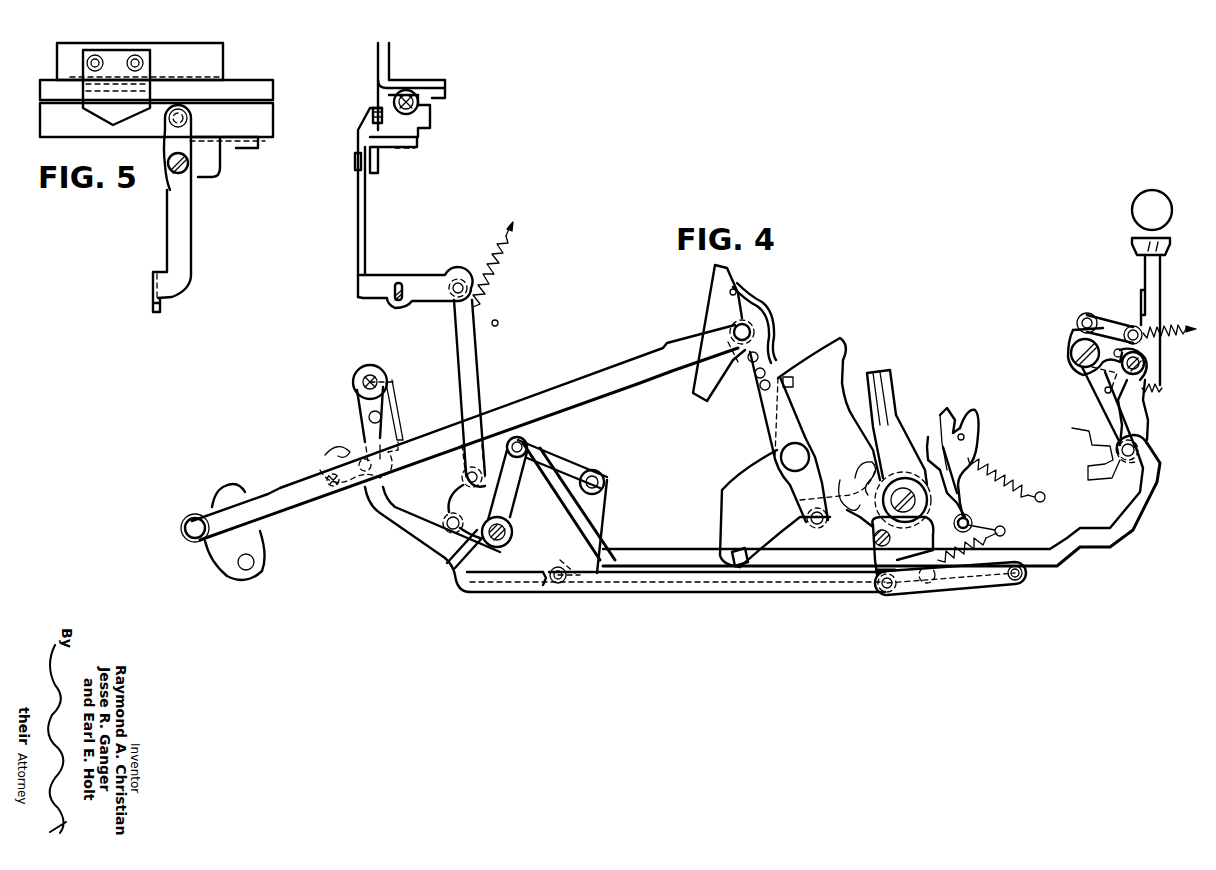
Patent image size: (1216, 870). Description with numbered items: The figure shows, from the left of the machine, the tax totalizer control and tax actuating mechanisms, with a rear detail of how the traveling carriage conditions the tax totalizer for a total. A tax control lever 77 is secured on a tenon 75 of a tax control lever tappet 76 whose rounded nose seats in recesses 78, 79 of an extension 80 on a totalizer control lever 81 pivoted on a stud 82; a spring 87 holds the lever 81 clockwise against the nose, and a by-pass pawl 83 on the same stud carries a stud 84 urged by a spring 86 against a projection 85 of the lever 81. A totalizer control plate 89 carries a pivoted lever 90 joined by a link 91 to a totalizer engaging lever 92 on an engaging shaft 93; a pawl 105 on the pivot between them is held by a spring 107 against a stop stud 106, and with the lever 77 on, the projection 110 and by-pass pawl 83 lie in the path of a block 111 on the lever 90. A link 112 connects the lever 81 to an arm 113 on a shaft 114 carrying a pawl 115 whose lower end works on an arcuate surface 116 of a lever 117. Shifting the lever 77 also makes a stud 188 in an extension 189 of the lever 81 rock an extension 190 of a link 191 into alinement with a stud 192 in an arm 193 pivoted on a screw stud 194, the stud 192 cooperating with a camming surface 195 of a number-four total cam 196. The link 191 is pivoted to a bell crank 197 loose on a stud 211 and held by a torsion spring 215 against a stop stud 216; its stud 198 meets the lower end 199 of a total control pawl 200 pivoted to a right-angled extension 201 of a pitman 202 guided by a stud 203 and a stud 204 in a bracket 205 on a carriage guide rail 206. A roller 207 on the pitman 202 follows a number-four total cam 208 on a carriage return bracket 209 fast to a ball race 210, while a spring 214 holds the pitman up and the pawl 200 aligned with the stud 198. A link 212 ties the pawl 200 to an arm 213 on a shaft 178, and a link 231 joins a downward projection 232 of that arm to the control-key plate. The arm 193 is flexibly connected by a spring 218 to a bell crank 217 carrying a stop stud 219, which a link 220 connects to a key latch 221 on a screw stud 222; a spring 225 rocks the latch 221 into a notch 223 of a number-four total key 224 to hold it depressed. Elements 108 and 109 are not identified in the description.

In FIG. 4, the tenon 75 is at (930, 500).
In FIG. 4, the tax control lever tappet 76 is at (872, 462).
In FIG. 4, the tax control lever 77 is at (895, 420).
In FIG. 4, the recess 78 is at (860, 540).
In FIG. 4, the recess 79 is at (853, 480).
In FIG. 4, the extension 80 is at (838, 455).
In FIG. 4, the totalizer control lever 81 is at (970, 450).
In FIG. 4, the stud 82 is at (875, 541).
In FIG. 4, the by-pass pawl 83 is at (937, 440).
In FIG. 4, the stud 84 is at (1000, 526).
In FIG. 4, the projection 85 is at (970, 519).
In FIG. 4, the spring 86 is at (1003, 534).
In FIG. 4, the spring 87 is at (1000, 480).
In FIG. 4, the totalizer control plate 89 is at (843, 343).
In FIG. 4, the lever 90 is at (762, 405).
In FIG. 4, the link 91 is at (626, 360).
In FIG. 4, the totalizer engaging lever 92 is at (234, 483).
In FIG. 4, the engaging shaft 93 is at (262, 560).
In FIG. 4, the pawl 105 is at (716, 281).
In FIG. 4, the stop stud 106 is at (762, 358).
In FIG. 4, the spring 107 is at (760, 318).
In FIG. 4, the tab 108 is at (732, 557).
In FIG. 4, the stud 109 is at (793, 381).
In FIG. 4, the projection 110 is at (957, 410).
In FIG. 4, the block 111 is at (815, 526).
In FIG. 4, the link 112 is at (512, 586).
In FIG. 4, the arm 113 is at (360, 406).
In FIG. 4, the shaft 114 is at (388, 383).
In FIG. 4, the pawl 115 is at (392, 412).
In FIG. 4, the arcuate surface 116 is at (340, 463).
In FIG. 4, the lever 117 is at (345, 452).
In FIG. 4, the shaft 178 is at (580, 530).
In FIG. 4, the stud 188 is at (1015, 582).
In FIG. 4, the extension 189 is at (940, 590).
In FIG. 4, the extension 190 is at (1150, 468).
In FIG. 4, the link 191 is at (605, 550).
In FIG. 4, the stud 192 is at (1140, 444).
In FIG. 4, the arm 193 is at (1140, 415).
In FIG. 4, the screw stud 194 is at (1071, 353).
In FIG. 4, the camming surface 195 is at (1105, 475).
In FIG. 4, the No. 4 total cam 196 is at (1076, 429).
In FIG. 4, the bell crank 197 is at (505, 497).
In FIG. 4, the stud 198 is at (447, 518).
In FIG. 4, the lower end 199 is at (456, 480).
In FIG. 4, the total control pawl 200 is at (458, 337).
In FIG. 5, the right-angled extension 201 is at (160, 307).
In FIG. 4, the right-angled extension 201 is at (437, 282).
In FIG. 5, the pitman 202 is at (183, 230).
In FIG. 4, the pitman 202 is at (365, 205).
In FIG. 4, the stud 203 is at (396, 312).
In FIG. 5, the stud 204 is at (187, 178).
In FIG. 4, the stud 204 is at (357, 180).
In FIG. 5, the bracket 205 is at (212, 168).
In FIG. 4, the bracket 205 is at (383, 150).
In FIG. 5, the traveling carriage guide rail 206 is at (258, 148).
In FIG. 4, the traveling carriage guide rail 206 is at (430, 120).
In FIG. 5, the roller 207 is at (190, 118).
In FIG. 4, the roller 207 is at (372, 115).
In FIG. 5, the No. 4 total cam 208 is at (108, 110).
In FIG. 4, the No. 4 total cam 208 is at (381, 99).
In FIG. 5, the carriage return bracket 209 is at (205, 60).
In FIG. 4, the carriage return bracket 209 is at (392, 62).
In FIG. 5, the ball race 210 is at (218, 88).
In FIG. 4, the ball race 210 is at (437, 92).
In FIG. 4, the stud 211 is at (495, 540).
In FIG. 4, the link 212 is at (565, 470).
In FIG. 4, the arm 213 is at (601, 496).
In FIG. 4, the spring 214 is at (497, 252).
In FIG. 4, the torsion spring 215 is at (453, 565).
In FIG. 4, the stop stud 216 is at (440, 558).
In FIG. 4, the bell crank 217 is at (1072, 336).
In FIG. 4, the spring 218 is at (1100, 387).
In FIG. 4, the stop stud 219 is at (1146, 365).
In FIG. 4, the link 220 is at (1105, 318).
In FIG. 4, the key latch 221 is at (1145, 343).
In FIG. 4, the screw stud 222 is at (1162, 389).
In FIG. 4, the notch 223 is at (1133, 306).
In FIG. 4, the No. 4 total key 224 is at (1145, 266).
In FIG. 4, the spring 225 is at (1172, 322).
In FIG. 4, the link 231 is at (585, 585).
In FIG. 4, the projection 232 is at (540, 585).